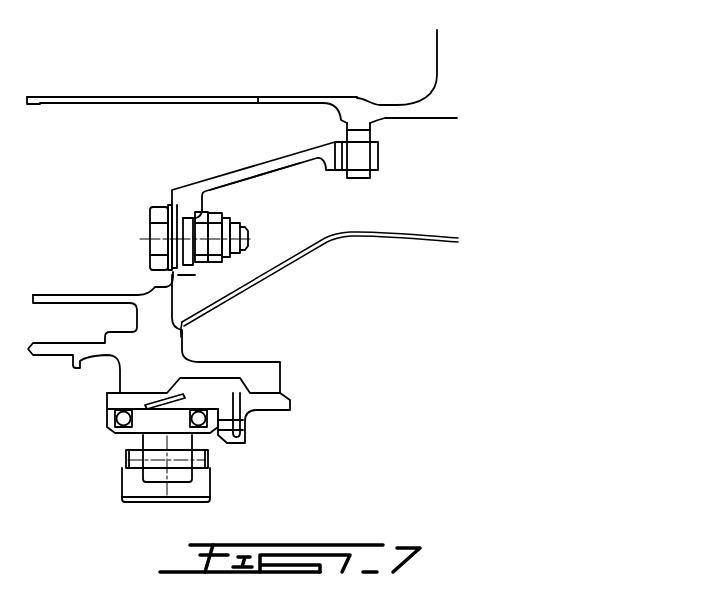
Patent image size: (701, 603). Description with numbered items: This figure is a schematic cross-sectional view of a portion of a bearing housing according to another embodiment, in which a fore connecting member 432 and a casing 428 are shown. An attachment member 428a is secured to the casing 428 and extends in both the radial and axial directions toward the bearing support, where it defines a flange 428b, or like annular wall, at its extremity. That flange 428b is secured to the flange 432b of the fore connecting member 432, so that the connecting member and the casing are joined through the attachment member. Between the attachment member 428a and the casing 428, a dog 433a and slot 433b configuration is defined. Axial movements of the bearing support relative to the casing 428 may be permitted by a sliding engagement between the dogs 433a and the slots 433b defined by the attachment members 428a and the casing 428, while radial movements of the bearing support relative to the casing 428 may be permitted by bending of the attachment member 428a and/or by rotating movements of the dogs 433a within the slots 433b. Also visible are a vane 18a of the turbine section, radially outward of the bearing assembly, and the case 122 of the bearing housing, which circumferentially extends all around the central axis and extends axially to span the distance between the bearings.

The casing 428 is at (95, 97).
The attachment member 428a is at (263, 173).
The flange 428b is at (172, 198).
The fore connecting member 432 is at (234, 140).
The flange 432b is at (200, 272).
The dog 433a is at (362, 154).
The slot 433b is at (448, 151).
The vane 18a is at (437, 48).
The case 122 is at (402, 233).